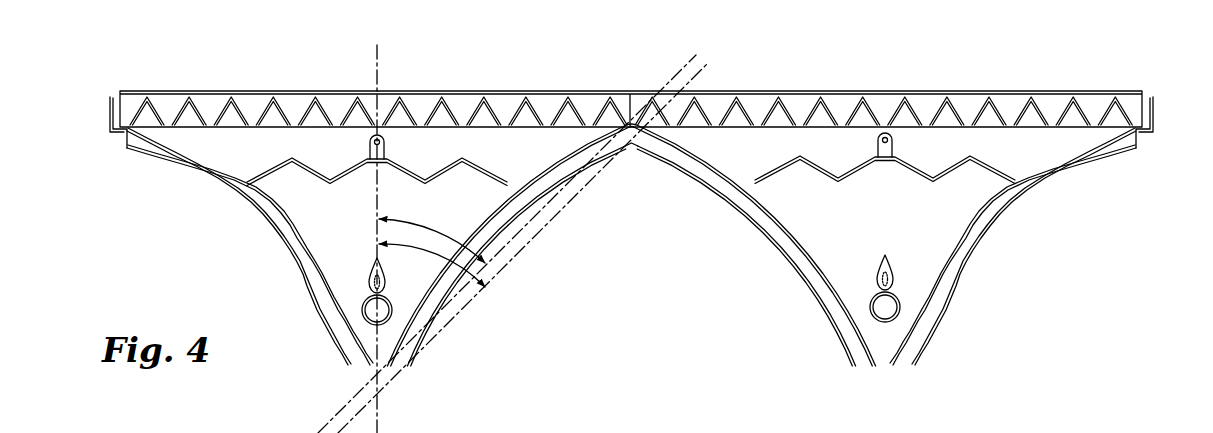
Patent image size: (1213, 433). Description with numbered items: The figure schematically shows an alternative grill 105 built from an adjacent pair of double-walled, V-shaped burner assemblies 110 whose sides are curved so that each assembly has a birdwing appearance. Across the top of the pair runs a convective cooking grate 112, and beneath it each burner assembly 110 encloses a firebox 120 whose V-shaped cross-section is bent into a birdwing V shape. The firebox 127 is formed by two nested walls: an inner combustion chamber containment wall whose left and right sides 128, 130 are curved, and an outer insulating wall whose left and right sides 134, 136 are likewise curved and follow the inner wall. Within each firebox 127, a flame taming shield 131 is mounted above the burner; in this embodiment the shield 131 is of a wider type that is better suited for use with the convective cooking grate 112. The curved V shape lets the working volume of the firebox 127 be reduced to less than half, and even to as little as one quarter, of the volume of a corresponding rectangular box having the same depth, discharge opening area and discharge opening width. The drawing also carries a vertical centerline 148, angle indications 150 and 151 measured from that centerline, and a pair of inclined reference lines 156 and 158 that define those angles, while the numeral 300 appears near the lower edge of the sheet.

The grill 105 is at (654, 93).
The burner assembly 110 is at (631, 246).
The convective cooking grate 112 is at (762, 95).
The firebox 120 is at (631, 246).
The firebox 127 is at (290, 213).
The left side of inner combustion chamber containment wall 128 is at (240, 197).
The right side of inner combustion chamber containment wall 130 is at (556, 163).
The flame taming shield 131 is at (271, 166).
The left side of outer insulating wall 134 is at (258, 243).
The right side of outer insulating wall 136 is at (550, 200).
The vertical axis 148 is at (385, 411).
The first angle 150 is at (414, 222).
The second angle 151 is at (392, 243).
The first section line 156 is at (527, 228).
The second section line 158 is at (508, 266).
The light source 300 is at (991, 425).